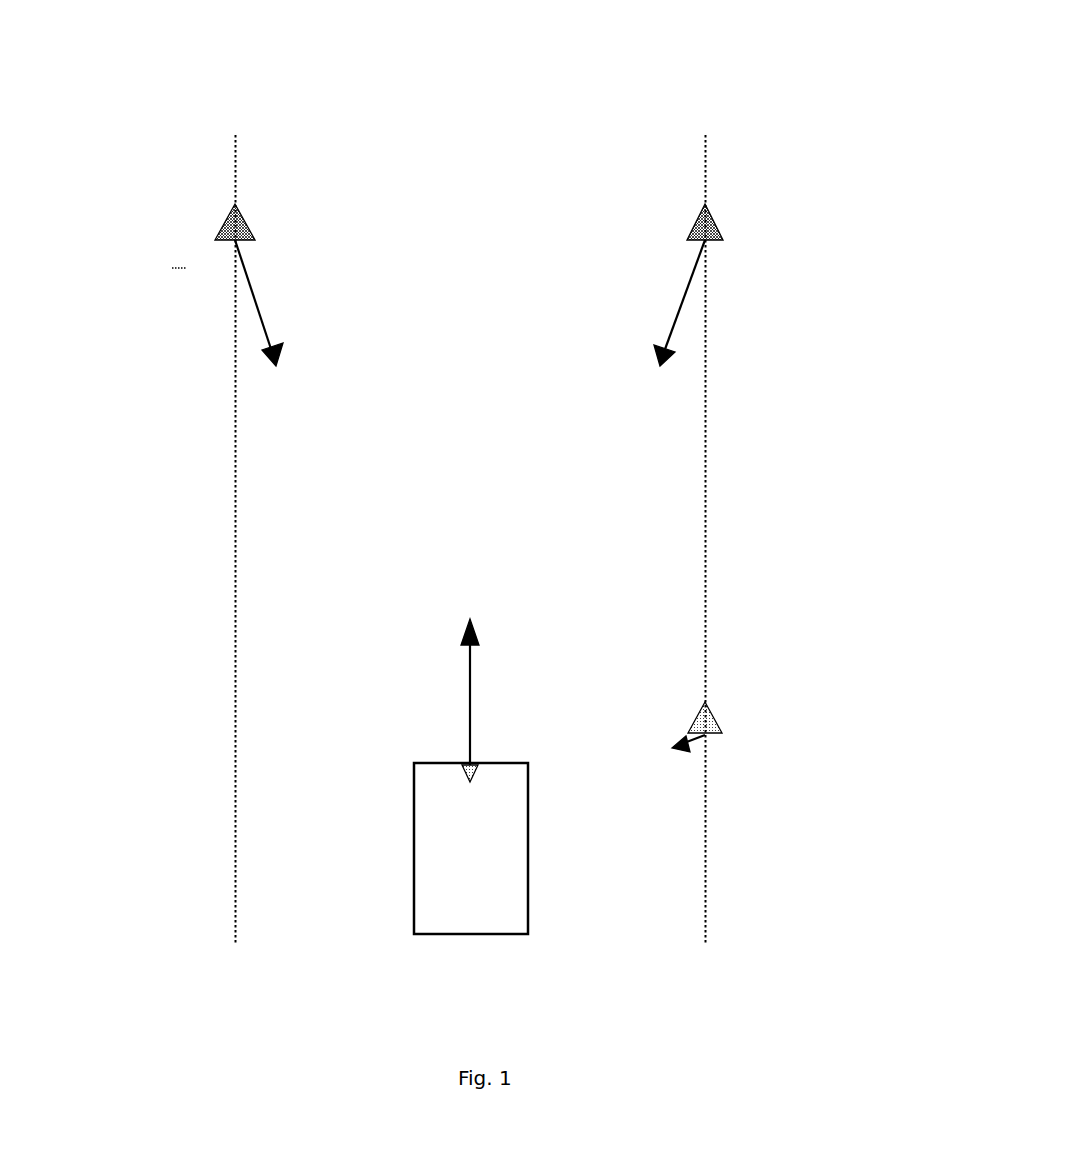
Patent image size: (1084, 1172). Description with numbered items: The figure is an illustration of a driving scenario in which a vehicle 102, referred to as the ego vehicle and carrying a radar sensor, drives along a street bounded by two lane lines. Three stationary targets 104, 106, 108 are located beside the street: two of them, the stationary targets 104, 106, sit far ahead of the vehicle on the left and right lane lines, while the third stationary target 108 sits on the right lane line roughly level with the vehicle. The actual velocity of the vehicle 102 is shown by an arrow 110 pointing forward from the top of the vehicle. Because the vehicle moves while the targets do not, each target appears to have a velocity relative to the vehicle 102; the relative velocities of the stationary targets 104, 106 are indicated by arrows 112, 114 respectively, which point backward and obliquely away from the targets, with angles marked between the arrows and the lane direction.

The vehicle 102 is at (530, 792).
The stationary target 104 is at (246, 216).
The stationary target 106 is at (712, 213).
The stationary target 108 is at (706, 703).
The arrow 110 is at (472, 719).
The arrow 112 is at (259, 308).
The arrow 114 is at (688, 300).